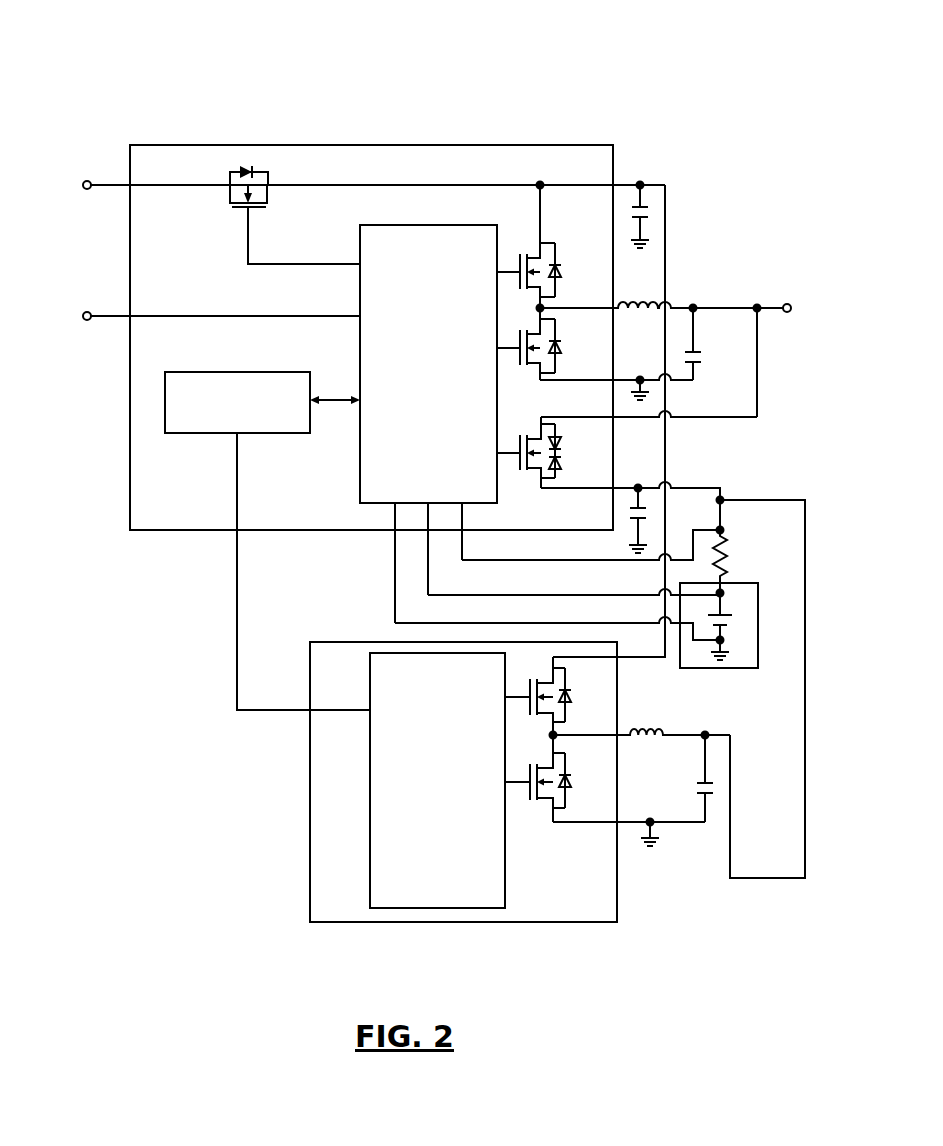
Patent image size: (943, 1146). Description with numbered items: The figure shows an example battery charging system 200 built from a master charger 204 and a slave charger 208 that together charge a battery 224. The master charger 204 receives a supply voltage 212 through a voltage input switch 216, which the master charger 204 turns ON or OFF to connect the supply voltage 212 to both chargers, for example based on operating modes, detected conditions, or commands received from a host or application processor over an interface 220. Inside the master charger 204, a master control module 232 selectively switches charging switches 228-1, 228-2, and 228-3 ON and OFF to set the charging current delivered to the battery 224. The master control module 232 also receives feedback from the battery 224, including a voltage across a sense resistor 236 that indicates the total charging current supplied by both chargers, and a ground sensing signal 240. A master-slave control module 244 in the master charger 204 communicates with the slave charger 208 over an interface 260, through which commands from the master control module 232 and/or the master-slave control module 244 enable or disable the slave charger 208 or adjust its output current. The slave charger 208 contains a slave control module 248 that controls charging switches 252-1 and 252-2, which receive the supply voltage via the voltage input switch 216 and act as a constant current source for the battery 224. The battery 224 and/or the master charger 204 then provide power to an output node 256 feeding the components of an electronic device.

The battery charging system 200 is at (106, 46).
The master charger 204 is at (370, 145).
The slave charger 208 is at (478, 922).
The supply voltage 212 is at (87, 182).
The voltage input switch 216 is at (221, 212).
The interface 220 is at (224, 316).
The battery 224 is at (717, 668).
The charging switch 228-1 is at (519, 244).
The charging switch 228-2 is at (528, 378).
The charging switch 228-3 is at (520, 487).
The master control module 232 is at (418, 225).
The sense resistor 236 is at (725, 537).
The ground sensing signal 240 is at (540, 623).
The master-slave control module 244 is at (227, 372).
The slave control module 248 is at (370, 793).
The charging switch 252-1 is at (591, 677).
The charging switch 252-2 is at (530, 826).
The output node 256 is at (790, 308).
The interface 260 is at (237, 617).